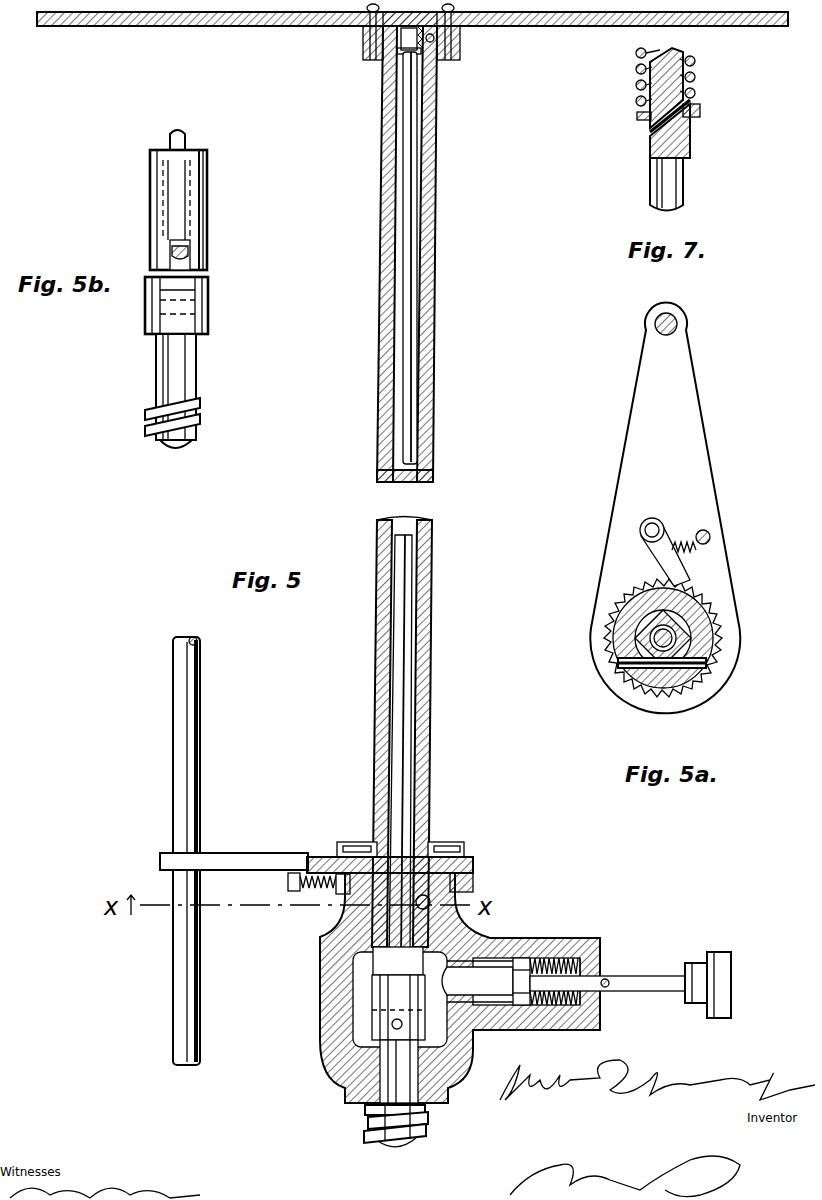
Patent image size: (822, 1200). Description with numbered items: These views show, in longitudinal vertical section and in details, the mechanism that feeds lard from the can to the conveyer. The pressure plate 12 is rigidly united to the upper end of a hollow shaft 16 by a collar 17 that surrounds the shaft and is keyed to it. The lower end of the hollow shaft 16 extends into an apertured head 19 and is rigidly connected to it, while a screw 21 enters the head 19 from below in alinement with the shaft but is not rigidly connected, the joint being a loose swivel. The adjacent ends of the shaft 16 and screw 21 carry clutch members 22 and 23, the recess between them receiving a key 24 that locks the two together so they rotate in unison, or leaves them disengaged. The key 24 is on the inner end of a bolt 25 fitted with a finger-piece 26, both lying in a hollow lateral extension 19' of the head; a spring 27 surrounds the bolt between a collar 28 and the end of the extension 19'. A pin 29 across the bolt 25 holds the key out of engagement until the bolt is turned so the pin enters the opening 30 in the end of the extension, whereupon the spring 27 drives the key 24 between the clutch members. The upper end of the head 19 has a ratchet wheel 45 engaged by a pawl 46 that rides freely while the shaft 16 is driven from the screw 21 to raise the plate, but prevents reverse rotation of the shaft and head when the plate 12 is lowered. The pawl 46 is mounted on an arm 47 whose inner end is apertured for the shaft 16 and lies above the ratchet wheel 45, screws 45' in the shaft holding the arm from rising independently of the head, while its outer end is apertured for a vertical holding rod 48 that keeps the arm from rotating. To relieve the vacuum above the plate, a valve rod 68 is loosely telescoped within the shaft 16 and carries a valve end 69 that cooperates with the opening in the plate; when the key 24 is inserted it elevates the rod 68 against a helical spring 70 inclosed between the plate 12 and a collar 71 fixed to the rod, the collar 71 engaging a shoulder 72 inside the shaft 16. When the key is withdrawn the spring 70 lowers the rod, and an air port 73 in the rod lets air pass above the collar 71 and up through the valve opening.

In FIG. 5, the pressure plate 12 is at (592, 27).
In FIG. 5, the hollow shaft 16 is at (386, 200).
In FIG. 5A, the hollow shaft 16 is at (690, 632).
In FIG. 5B, the hollow shaft 16 is at (199, 228).
In FIG. 5, the collar 17 is at (363, 50).
In FIG. 5, the apertured head 19 is at (436, 988).
In FIG. 5A, the apertured head 19 is at (692, 632).
In FIG. 5, the hollow lateral extension 19' is at (513, 954).
In FIG. 5, the screw 21 is at (365, 1136).
In FIG. 5B, the screw 21 is at (183, 380).
In FIG. 5, the clutch member 22 is at (395, 975).
In FIG. 5, the clutch member 23 is at (385, 1005).
In FIG. 5, the key 24 is at (477, 981).
In FIG. 5, the bolt 25 is at (636, 976).
In FIG. 5, the finger-piece 26 is at (718, 978).
In FIG. 5, the spring 27 is at (558, 958).
In FIG. 5, the collar 28 is at (528, 1005).
In FIG. 5, the pin 29 is at (607, 990).
In FIG. 5, the opening 30 is at (588, 1000).
In FIG. 5, the ratchet wheel 45 is at (416, 873).
In FIG. 5A, the ratchet wheel 45 is at (703, 666).
In FIG. 5, the screws 45' is at (407, 830).
In FIG. 5, the pawl 46 is at (340, 894).
In FIG. 5A, the pawl 46 is at (666, 528).
In FIG. 5, the arm 47 is at (232, 853).
In FIG. 5A, the arm 47 is at (665, 508).
In FIG. 5, the vertical holding rod 48 is at (173, 950).
In FIG. 5A, the vertical holding rod 48 is at (678, 324).
In FIG. 5, the valve rod 68 is at (408, 334).
In FIG. 7, the valve rod 68 is at (684, 196).
In FIG. 5A, the valve rod 68 is at (640, 660).
In FIG. 5B, the valve rod 68 is at (188, 138).
In FIG. 7, the valve end 69 is at (690, 52).
In FIG. 5, the helical spring 70 is at (380, 62).
In FIG. 7, the helical spring 70 is at (695, 92).
In FIG. 5, the collar 71 is at (385, 75).
In FIG. 7, the collar 71 is at (700, 114).
In FIG. 5, the shoulder 72 is at (436, 62).
In FIG. 5, the air port 73 is at (385, 145).
In FIG. 7, the air port 73 is at (655, 128).